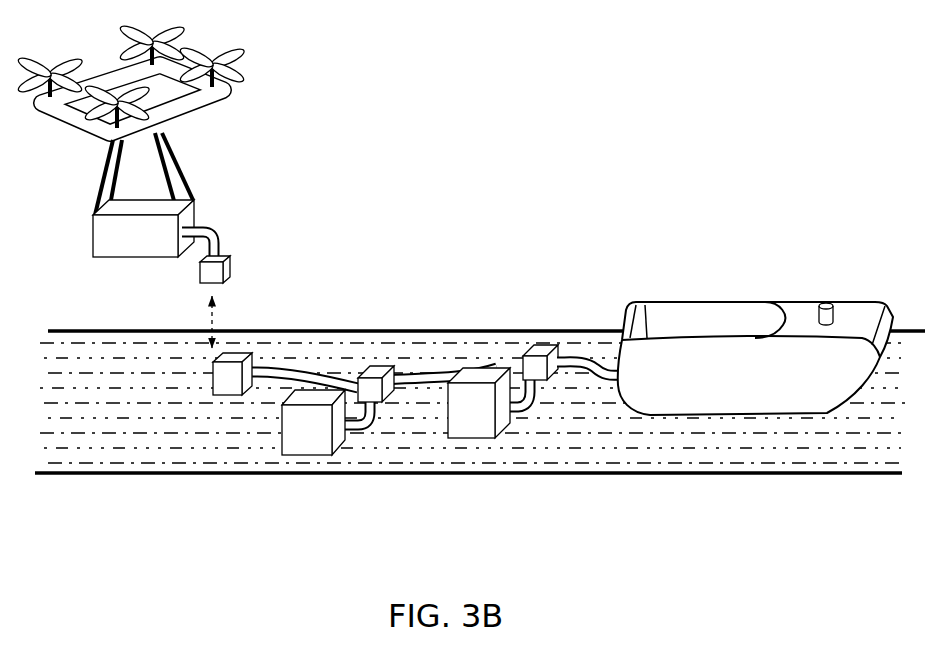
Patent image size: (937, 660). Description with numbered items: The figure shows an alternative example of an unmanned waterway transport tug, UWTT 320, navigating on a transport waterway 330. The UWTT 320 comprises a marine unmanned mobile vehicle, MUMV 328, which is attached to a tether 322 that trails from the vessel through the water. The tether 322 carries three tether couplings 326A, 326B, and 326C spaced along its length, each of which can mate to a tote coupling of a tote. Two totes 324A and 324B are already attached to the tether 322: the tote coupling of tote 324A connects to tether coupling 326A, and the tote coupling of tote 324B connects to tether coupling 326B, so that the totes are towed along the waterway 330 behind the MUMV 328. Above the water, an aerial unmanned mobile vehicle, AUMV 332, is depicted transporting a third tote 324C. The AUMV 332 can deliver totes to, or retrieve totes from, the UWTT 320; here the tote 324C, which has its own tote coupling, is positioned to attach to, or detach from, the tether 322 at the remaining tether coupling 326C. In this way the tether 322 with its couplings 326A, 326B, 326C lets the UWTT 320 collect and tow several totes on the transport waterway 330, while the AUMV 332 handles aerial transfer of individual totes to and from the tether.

The UWTT 320 is at (755, 315).
The tether 322 is at (577, 356).
The tote 324A is at (437, 422).
The tote 324B is at (270, 438).
The tote 324C is at (218, 206).
The tether coupling 326A is at (522, 352).
The tether coupling 326B is at (360, 370).
The tether coupling 326C is at (200, 368).
The MUMV 328 is at (766, 390).
The transport waterway 330 is at (555, 486).
The AUMV 332 is at (107, 67).